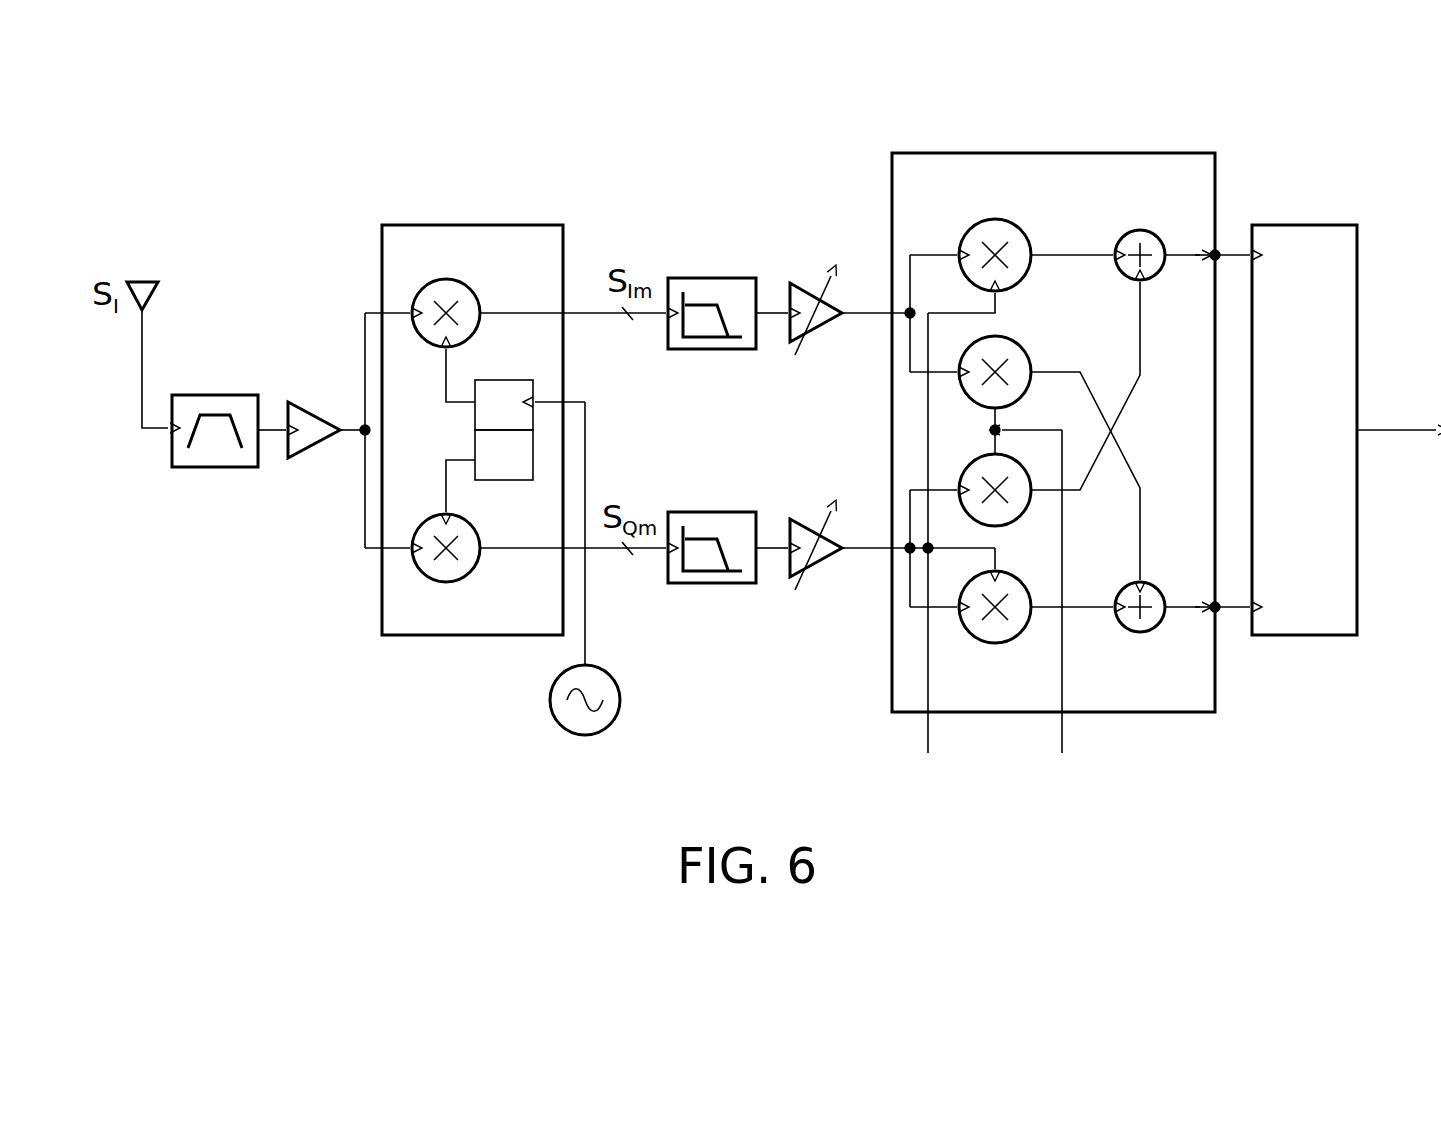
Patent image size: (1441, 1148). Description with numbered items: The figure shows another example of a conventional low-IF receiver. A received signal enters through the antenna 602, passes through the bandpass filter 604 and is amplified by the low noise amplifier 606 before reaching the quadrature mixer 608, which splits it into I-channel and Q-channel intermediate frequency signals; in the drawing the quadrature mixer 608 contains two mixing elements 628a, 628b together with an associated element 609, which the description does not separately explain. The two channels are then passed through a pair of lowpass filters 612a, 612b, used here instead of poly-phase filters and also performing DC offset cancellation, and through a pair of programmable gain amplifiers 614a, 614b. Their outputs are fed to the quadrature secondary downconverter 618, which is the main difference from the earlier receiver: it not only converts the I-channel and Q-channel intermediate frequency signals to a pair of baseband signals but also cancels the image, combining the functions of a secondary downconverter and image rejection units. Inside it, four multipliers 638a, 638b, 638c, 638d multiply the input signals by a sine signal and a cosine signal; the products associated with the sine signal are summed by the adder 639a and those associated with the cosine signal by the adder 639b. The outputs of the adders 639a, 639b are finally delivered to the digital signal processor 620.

The antenna 602 is at (142, 280).
The bandpass filter 604 is at (214, 393).
The low noise amplifier 606 is at (320, 400).
The quadrature mixer 608 is at (475, 405).
The local oscillator 609 is at (580, 737).
The lowpass filter 612a is at (712, 278).
The lowpass filter 612b is at (712, 583).
The programmable gain amplifier 614a is at (812, 280).
The programmable gain amplifier 614b is at (812, 517).
The quadrature secondary downconverter 618 is at (1053, 449).
The digital signal processor 620 is at (1305, 225).
The mixer 628a is at (450, 280).
The mixer 628b is at (450, 583).
The multiplier 638a is at (998, 220).
The multiplier 638b is at (1020, 340).
The multiplier 638c is at (1015, 522).
The multiplier 638d is at (995, 643).
The adder 639a is at (1140, 230).
The adder 639b is at (1140, 632).